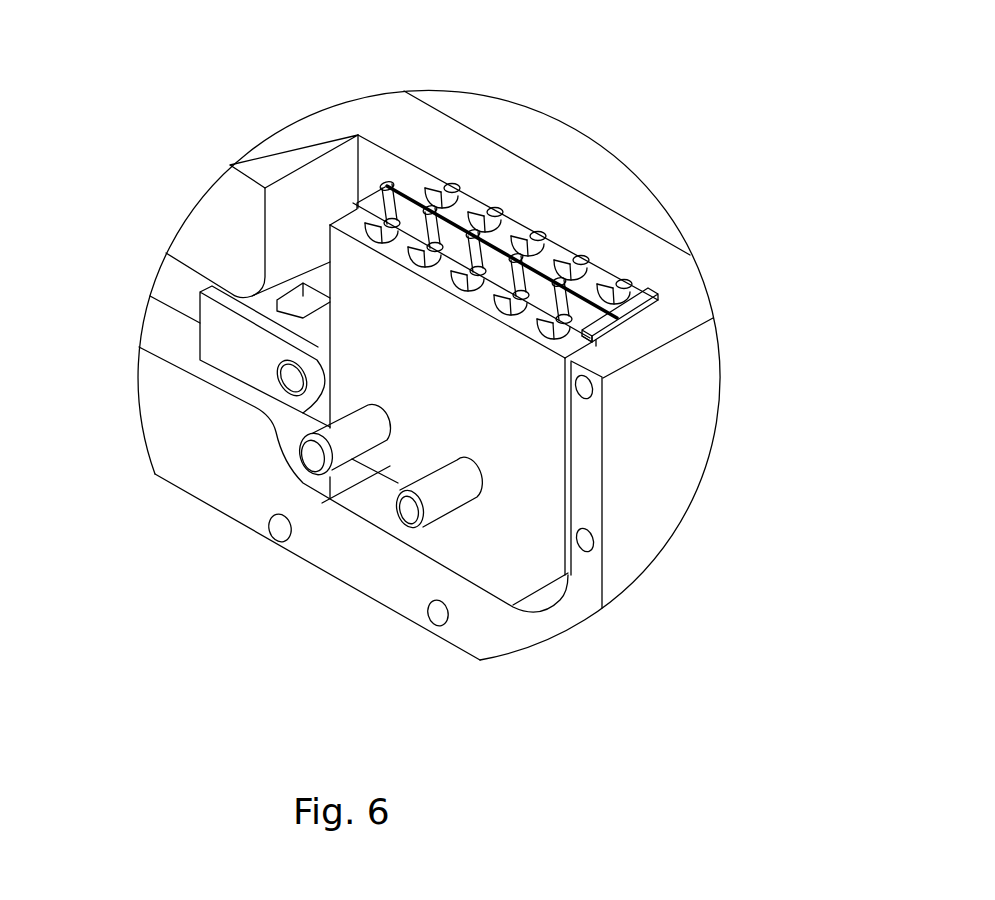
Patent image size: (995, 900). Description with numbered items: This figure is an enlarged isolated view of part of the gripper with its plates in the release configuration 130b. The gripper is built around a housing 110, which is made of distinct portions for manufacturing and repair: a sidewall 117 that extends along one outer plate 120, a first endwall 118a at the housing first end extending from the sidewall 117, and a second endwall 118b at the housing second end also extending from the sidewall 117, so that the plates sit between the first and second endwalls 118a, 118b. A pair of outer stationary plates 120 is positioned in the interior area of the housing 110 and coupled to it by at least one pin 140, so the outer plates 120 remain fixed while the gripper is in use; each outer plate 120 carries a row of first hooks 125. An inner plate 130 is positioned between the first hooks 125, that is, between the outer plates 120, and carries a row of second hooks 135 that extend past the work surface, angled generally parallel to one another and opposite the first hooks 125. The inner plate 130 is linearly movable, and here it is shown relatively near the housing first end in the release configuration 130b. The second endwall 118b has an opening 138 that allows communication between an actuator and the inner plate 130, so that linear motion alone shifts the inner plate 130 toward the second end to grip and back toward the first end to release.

The housing 110 is at (447, 108).
The sidewall 117 is at (540, 192).
The first endwall 118a is at (683, 302).
The second endwall 118b is at (275, 145).
The outer stationary plate 120 is at (570, 245).
The first hooks 125 is at (662, 306).
The inner plate 130 is at (362, 183).
The release configuration 130b is at (613, 342).
The second hooks 135 is at (394, 188).
The opening 138 is at (173, 278).
The pin 140 is at (312, 460).